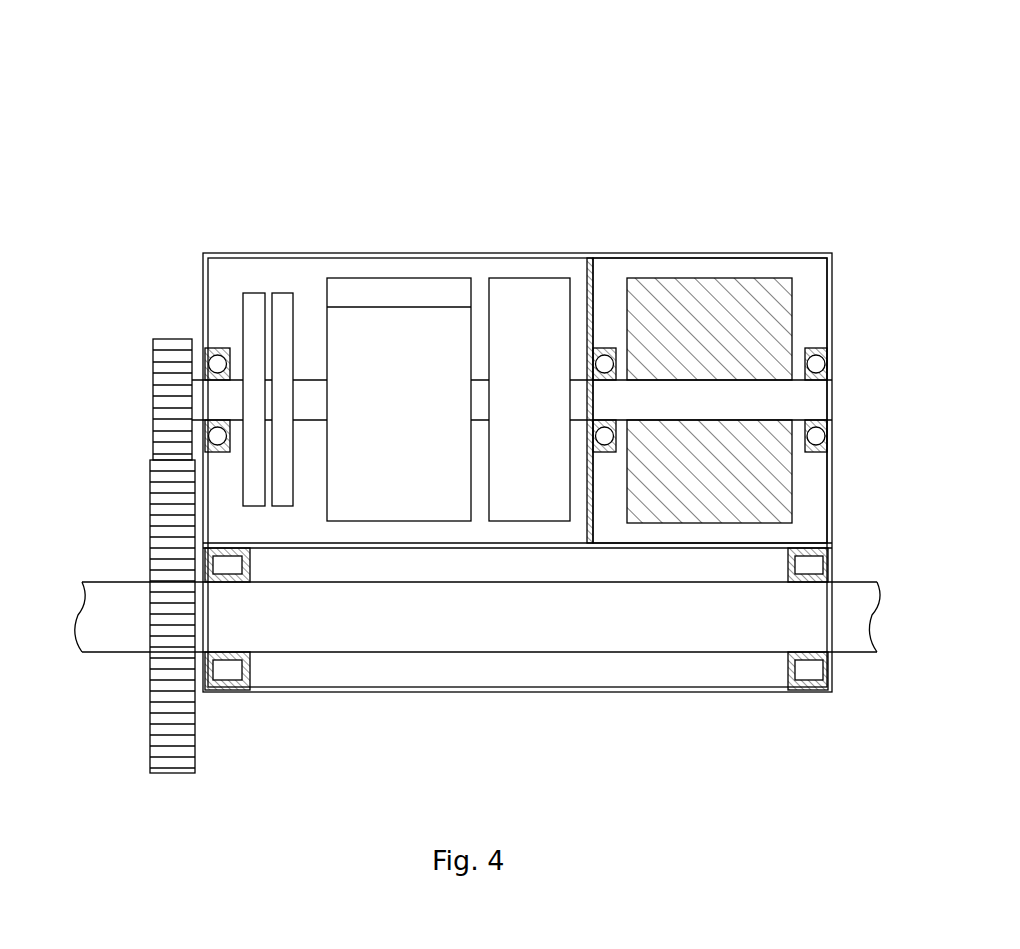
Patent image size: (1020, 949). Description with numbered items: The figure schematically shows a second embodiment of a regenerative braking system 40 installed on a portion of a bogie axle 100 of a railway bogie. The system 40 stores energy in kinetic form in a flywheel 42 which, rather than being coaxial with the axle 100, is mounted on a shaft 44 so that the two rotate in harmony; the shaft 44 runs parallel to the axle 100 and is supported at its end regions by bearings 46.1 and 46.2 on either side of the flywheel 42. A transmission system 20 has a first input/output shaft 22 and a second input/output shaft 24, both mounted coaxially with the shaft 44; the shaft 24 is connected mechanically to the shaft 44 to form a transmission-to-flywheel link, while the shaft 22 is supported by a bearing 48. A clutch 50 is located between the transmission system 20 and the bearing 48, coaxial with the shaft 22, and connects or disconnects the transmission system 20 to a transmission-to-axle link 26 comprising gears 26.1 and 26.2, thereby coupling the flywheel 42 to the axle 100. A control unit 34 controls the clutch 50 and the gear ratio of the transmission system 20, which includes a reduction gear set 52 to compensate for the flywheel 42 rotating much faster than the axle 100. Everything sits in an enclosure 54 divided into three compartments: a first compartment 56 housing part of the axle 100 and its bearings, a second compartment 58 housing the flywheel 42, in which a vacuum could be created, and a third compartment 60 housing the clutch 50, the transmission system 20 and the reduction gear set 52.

The transmission system 20 is at (400, 330).
The first input/output shaft 22 is at (222, 362).
The second input/output shaft 24 is at (480, 395).
The transmission-to-axle link 26 is at (108, 554).
The gear 26.1 is at (158, 775).
The gear 26.2 is at (160, 338).
The control unit 34 is at (364, 290).
The regenerative braking system 40 is at (797, 125).
The flywheel 42 is at (790, 500).
The shaft 44 is at (813, 400).
The bearing 46.1 is at (605, 345).
The bearing 46.2 is at (815, 345).
The bearing 48 is at (225, 400).
The clutch 50 is at (257, 292).
The reduction gear set 52 is at (555, 277).
The enclosure 54 is at (533, 692).
The first compartment 56 is at (388, 672).
The second compartment 58 is at (808, 272).
The third compartment 60 is at (533, 265).
The bogie axle 100 is at (120, 595).